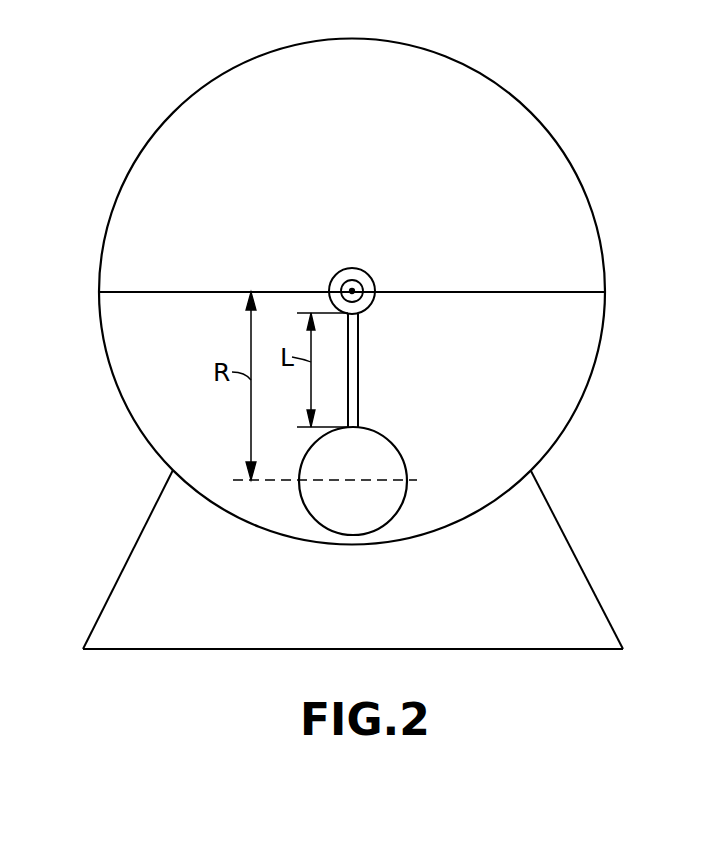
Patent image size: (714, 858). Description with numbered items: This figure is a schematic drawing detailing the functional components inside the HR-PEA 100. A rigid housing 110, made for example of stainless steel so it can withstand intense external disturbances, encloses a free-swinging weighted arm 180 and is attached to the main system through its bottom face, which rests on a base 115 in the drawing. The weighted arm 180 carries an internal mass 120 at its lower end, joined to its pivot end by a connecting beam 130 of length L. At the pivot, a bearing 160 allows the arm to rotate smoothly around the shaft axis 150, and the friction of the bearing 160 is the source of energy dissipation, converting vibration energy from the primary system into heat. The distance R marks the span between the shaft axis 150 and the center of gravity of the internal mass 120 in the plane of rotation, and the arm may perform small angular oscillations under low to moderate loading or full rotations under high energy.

The HR-PEA 100 is at (136, 489).
The housing 110 is at (148, 142).
The base 115 is at (545, 649).
The internal mass 120 is at (392, 453).
The connecting beam 130 is at (353, 348).
The shaft axis 150 is at (353, 290).
The bearing 160 is at (343, 278).
The free-swinging weighted arm 180 is at (405, 393).